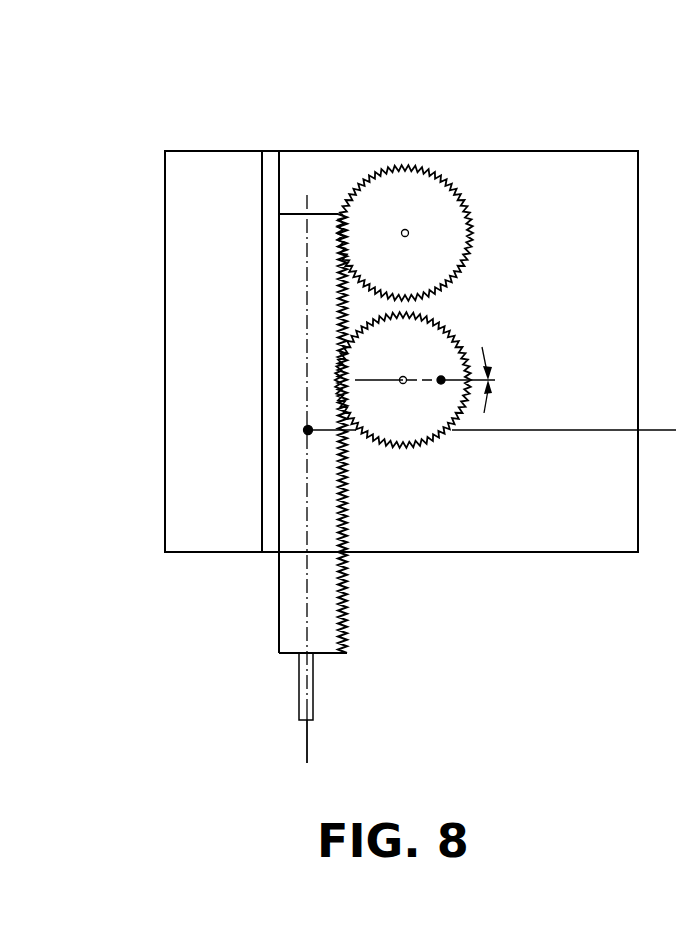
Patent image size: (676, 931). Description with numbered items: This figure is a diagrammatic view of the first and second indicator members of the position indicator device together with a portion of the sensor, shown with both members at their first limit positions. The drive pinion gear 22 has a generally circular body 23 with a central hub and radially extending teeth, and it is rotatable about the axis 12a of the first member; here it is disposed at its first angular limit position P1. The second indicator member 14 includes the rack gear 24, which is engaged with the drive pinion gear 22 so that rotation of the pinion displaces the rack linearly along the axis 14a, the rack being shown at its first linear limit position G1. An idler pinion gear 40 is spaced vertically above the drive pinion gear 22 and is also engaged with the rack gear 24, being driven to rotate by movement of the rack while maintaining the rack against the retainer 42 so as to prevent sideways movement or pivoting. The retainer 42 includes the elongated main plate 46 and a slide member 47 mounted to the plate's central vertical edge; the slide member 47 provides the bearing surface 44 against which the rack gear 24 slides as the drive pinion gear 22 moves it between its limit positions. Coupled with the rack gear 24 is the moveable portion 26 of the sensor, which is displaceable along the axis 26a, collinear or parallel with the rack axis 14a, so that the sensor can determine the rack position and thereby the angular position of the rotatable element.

The retainer 42 is at (206, 148).
The elongated plate 46 is at (183, 302).
The slide member 47 is at (270, 158).
The bearing surface 44 is at (282, 192).
The second indicator member 14 is at (366, 432).
The axis 14a is at (310, 206).
The rack gear 24 is at (360, 600).
The moveable portion 26 is at (327, 695).
The axis 26a is at (308, 740).
The idler pinion gear 40 is at (449, 168).
The drive pinion gear 22 is at (428, 382).
The circular body 23 is at (425, 348).
The axis 12a is at (404, 381).
The first angular limit position P1 is at (441, 377).
The first position G1 is at (308, 430).